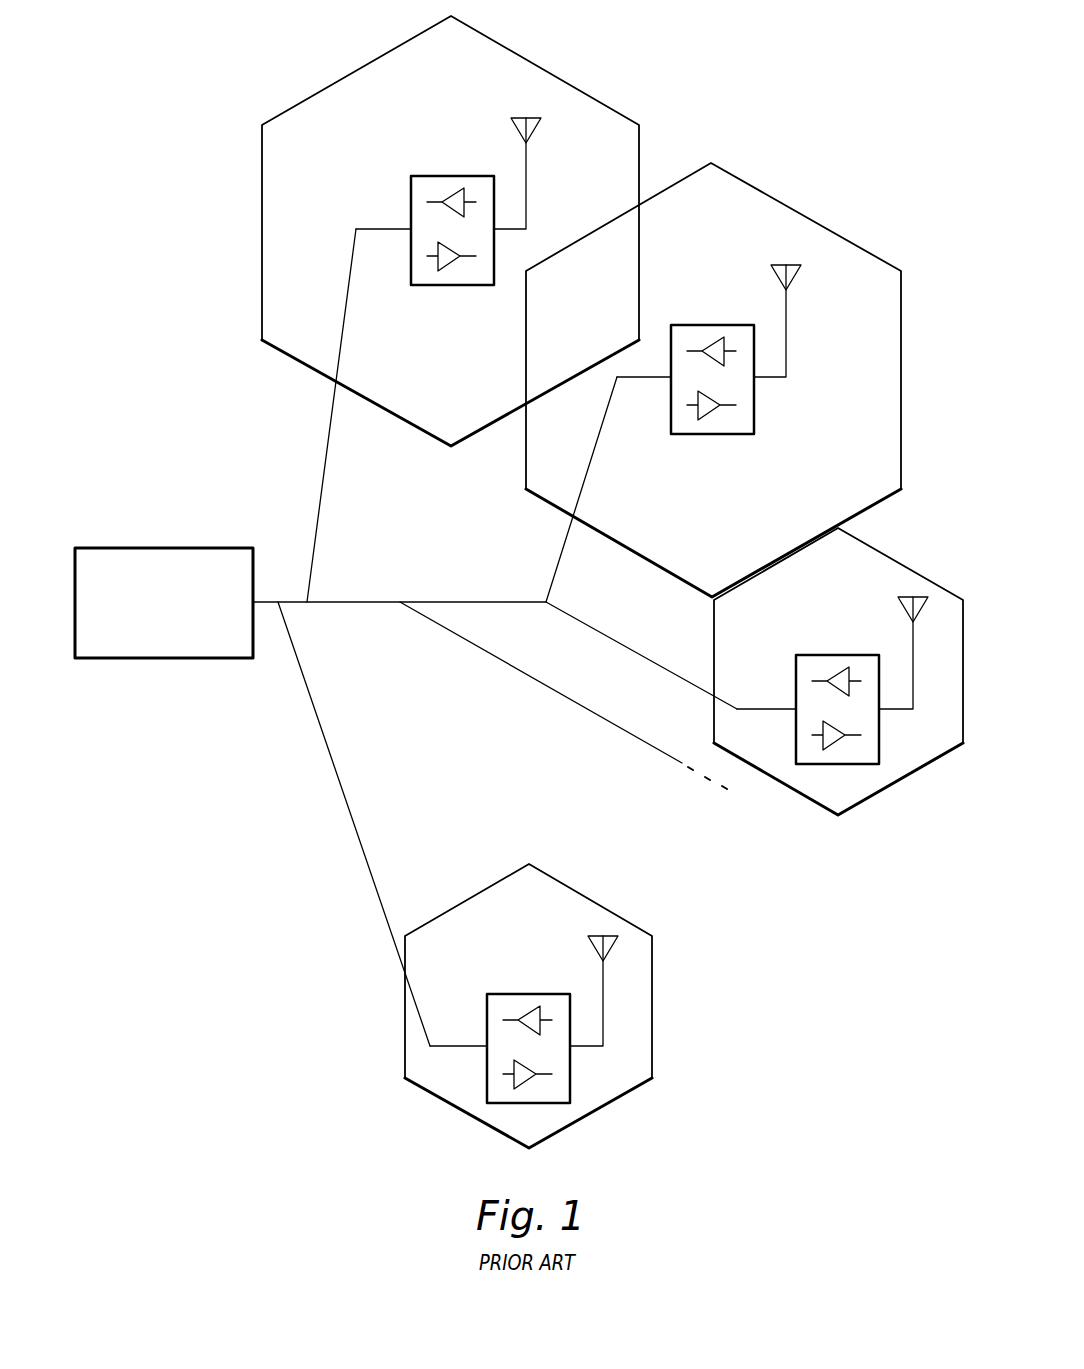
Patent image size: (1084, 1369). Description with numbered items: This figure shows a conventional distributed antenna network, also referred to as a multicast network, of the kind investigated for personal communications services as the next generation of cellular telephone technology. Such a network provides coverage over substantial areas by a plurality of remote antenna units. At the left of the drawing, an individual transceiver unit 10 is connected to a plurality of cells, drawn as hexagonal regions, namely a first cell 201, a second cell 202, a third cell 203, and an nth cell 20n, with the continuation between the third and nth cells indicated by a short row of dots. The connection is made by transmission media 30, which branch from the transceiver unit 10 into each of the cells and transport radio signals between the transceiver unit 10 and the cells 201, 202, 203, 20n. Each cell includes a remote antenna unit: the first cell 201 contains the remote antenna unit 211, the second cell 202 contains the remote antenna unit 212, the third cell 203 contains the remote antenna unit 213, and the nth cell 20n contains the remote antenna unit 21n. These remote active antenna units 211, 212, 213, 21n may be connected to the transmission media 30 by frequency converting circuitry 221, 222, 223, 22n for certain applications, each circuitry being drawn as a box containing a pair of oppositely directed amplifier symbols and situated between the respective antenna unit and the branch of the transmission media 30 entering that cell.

The transceiver unit 10 is at (163, 658).
The transmission media 30 is at (353, 602).
The cell 201 is at (355, 73).
The remote antenna unit 211 is at (530, 118).
The frequency converting circuitry 221 is at (456, 176).
The cell 202 is at (757, 187).
The remote antenna unit 212 is at (790, 265).
The frequency converting circuitry 222 is at (713, 325).
The cell 203 is at (898, 782).
The remote antenna unit 213 is at (915, 597).
The frequency converting circuitry 223 is at (838, 655).
The cell 20n is at (652, 1010).
The remote antenna unit 21n is at (605, 936).
The frequency converting circuitry 22n is at (528, 994).